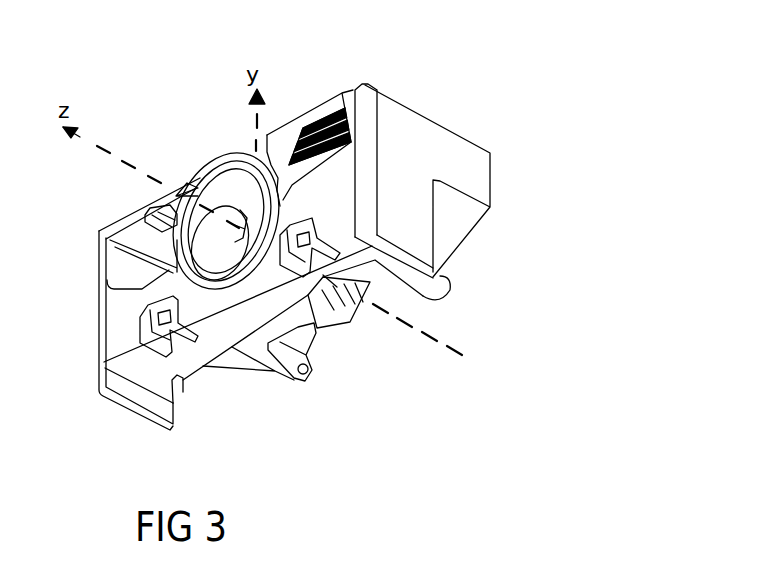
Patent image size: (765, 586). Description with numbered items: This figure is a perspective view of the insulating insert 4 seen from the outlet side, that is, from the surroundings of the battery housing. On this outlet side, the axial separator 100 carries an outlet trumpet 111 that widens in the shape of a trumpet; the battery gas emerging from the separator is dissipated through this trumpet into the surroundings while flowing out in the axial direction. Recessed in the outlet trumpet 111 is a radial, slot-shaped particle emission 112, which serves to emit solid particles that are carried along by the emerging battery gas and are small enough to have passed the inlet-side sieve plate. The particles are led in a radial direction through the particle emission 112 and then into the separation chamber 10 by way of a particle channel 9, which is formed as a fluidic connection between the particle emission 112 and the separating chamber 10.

The insulating insert 4 is at (427, 115).
The particle channel 9 is at (293, 137).
The separation chamber 10 is at (338, 107).
The axial separator 100 is at (352, 300).
The outlet trumpet 111 is at (197, 178).
The particle emission 112 is at (245, 151).